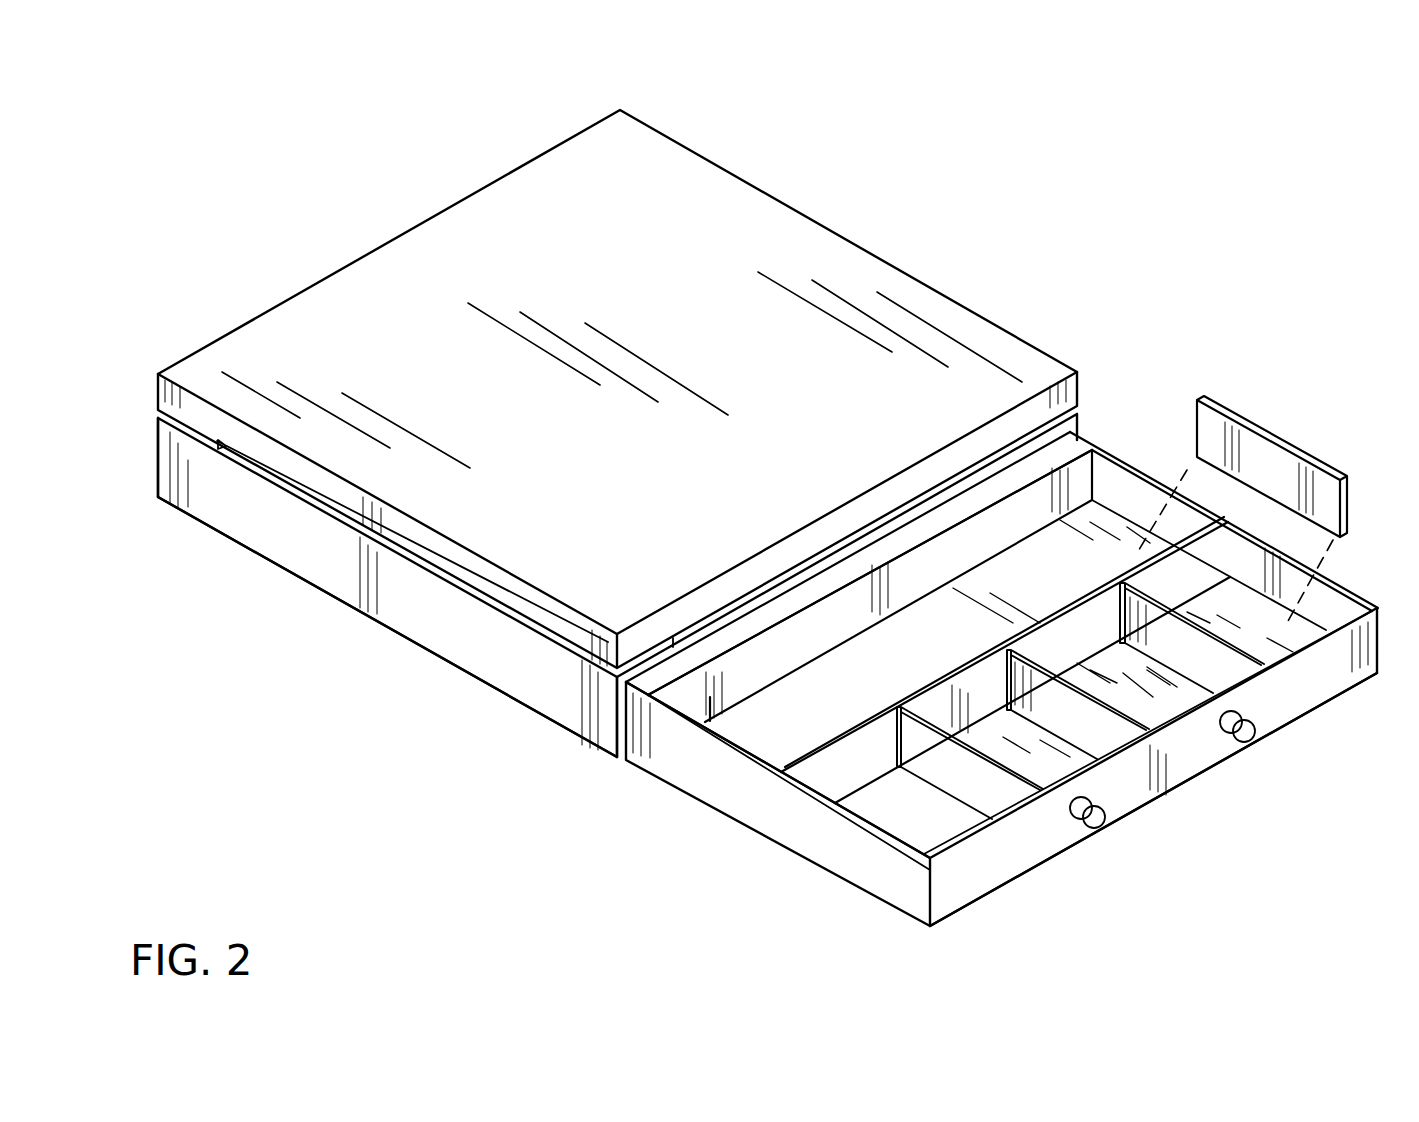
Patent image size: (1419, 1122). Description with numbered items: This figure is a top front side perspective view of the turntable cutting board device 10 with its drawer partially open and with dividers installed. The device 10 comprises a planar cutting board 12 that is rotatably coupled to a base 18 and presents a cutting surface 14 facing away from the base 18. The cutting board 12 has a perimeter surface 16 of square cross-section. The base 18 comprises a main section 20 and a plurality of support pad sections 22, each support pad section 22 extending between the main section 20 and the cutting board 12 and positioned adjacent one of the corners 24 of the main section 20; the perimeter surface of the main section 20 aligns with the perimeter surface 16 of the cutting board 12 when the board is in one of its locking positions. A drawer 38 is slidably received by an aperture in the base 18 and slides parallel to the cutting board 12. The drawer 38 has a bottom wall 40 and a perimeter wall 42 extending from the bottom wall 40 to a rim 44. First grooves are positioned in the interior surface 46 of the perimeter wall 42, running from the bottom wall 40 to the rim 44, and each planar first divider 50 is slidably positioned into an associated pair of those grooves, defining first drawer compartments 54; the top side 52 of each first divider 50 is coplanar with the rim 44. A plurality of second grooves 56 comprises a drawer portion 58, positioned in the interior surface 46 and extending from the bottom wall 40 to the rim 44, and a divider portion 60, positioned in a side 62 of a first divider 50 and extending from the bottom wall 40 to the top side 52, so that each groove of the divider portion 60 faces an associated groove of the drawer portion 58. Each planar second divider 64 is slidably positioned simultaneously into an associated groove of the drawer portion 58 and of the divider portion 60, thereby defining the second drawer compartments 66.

The turntable cutting board device 10 is at (1047, 163).
The cutting board 12 is at (865, 293).
The cutting surface 14 is at (650, 155).
The perimeter surface 16 is at (157, 374).
The base 18 is at (282, 540).
The main section 20 is at (462, 635).
The support pad section 22 is at (160, 412).
The corner 24 is at (158, 473).
The drawer 38 is at (1383, 688).
The bottom wall 40 is at (790, 748).
The perimeter wall 42 is at (1312, 692).
The rim 44 is at (1362, 604).
The interior surface 46 is at (1110, 470).
The first divider 50 is at (865, 790).
The top side 52 is at (1030, 470).
The first drawer compartment 54 is at (716, 735).
The second groove 56 is at (1118, 583).
The drawer portion 58 is at (1050, 812).
The divider portion 60 is at (1108, 606).
The side 62 is at (1213, 555).
The second divider 64 is at (1307, 483).
The second drawer compartment 66 is at (1055, 722).